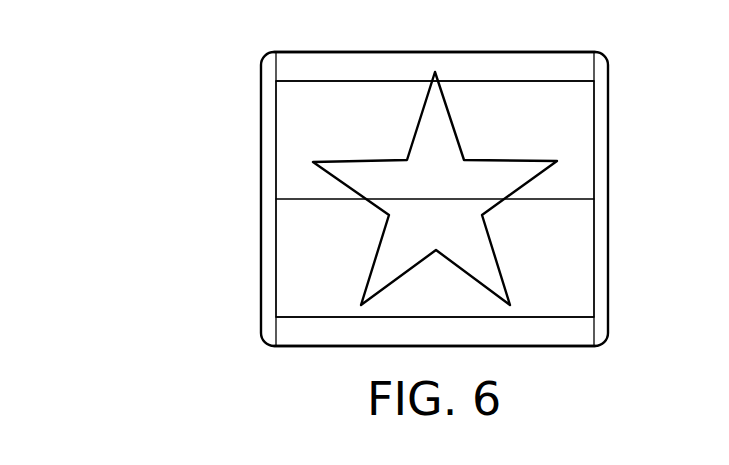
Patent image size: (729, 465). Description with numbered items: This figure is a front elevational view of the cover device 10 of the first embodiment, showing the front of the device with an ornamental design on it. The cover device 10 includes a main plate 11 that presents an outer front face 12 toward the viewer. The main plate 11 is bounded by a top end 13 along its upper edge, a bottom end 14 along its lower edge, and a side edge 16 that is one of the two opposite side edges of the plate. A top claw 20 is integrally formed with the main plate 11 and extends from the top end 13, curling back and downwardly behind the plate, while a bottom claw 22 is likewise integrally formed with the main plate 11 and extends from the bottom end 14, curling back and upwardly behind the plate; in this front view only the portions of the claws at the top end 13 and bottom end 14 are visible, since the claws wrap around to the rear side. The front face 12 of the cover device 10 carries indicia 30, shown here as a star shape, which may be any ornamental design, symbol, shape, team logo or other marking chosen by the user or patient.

The cover device 10 is at (212, 130).
The main plate 11 is at (563, 288).
The outer front face 12 is at (573, 150).
The top end 13 is at (560, 82).
The bottom end 14 is at (550, 317).
The side edge 16 is at (608, 187).
The top claw 20 is at (308, 52).
The bottom claw 22 is at (312, 346).
The indicia 30 is at (440, 145).